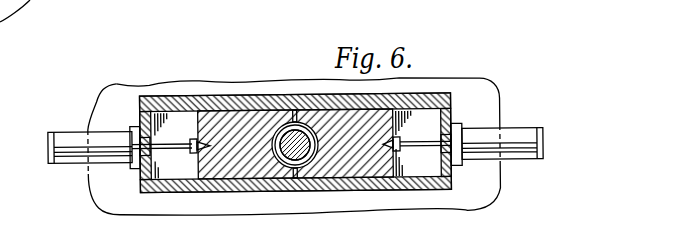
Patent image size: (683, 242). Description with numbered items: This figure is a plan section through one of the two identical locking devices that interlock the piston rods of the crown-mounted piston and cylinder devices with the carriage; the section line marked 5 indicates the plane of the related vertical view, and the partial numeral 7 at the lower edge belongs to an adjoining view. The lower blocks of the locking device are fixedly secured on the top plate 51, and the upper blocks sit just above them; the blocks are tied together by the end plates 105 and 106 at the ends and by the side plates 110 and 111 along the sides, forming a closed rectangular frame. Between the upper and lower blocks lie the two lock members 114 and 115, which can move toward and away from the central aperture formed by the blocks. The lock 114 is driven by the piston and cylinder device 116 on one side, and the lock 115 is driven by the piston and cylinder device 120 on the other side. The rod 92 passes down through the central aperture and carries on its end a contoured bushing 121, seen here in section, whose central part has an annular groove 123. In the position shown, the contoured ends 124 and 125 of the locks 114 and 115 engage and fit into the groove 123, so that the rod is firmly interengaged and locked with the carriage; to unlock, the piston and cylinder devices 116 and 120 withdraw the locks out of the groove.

The top plate 51 is at (185, 207).
The end plate 105 is at (141, 96).
The end plate 106 is at (452, 103).
The side plate 110 is at (238, 97).
The side plate 111 is at (233, 190).
The lock member 114 is at (209, 96).
The lock member 115 is at (393, 95).
The piston and cylinder device 116 is at (62, 138).
The piston and cylinder device 120 is at (522, 132).
The bushing 121 is at (308, 160).
The annular groove 123 is at (272, 142).
The contoured end 124 is at (283, 122).
The contoured end 125 is at (306, 118).
The section line 5- 5 is at (45, 147).
The rod 92 is at (352, 233).
The element 7 is at (297, 226).